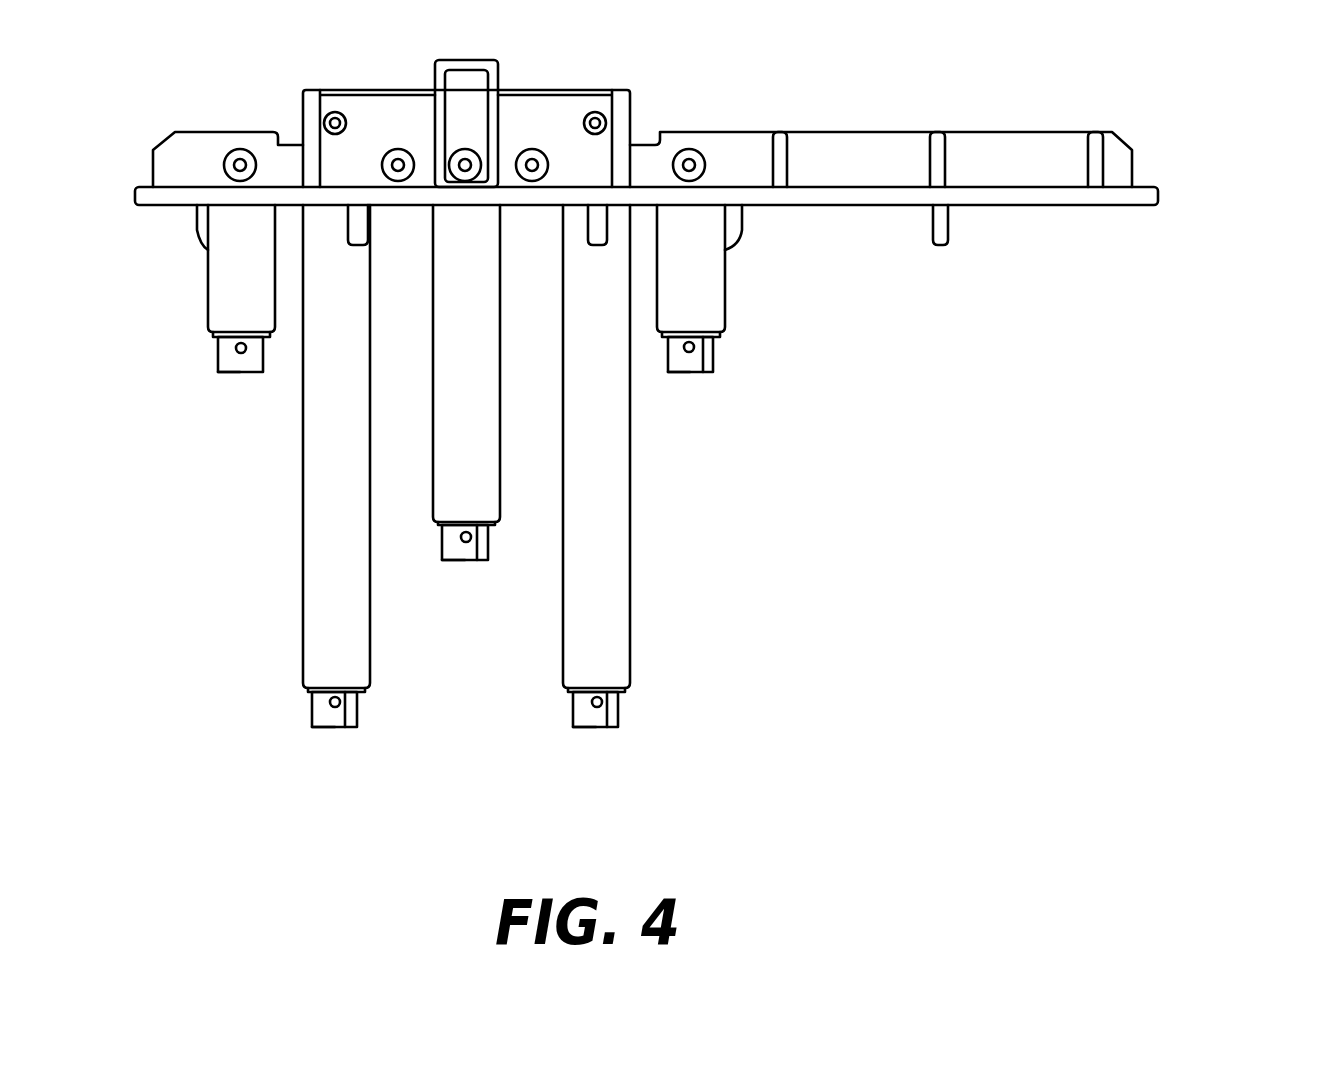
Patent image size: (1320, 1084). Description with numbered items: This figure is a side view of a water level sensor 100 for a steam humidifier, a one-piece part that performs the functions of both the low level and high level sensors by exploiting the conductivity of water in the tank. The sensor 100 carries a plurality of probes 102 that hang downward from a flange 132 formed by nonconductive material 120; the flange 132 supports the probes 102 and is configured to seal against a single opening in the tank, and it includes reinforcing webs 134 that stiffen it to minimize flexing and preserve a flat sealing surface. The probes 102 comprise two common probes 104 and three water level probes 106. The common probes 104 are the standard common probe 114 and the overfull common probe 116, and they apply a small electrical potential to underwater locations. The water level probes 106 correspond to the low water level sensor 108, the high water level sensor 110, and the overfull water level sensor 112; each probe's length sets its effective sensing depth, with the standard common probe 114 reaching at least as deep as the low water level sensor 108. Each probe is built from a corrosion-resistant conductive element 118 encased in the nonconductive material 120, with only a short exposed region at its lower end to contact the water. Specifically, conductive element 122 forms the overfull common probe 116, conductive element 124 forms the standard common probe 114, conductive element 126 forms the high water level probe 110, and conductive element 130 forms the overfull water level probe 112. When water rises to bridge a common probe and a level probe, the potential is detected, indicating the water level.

The water level sensor 100 is at (850, 132).
The probes 102 is at (885, 476).
The common probes 104 is at (214, 337).
The water level probes 106 is at (476, 562).
The low water level sensor 108 is at (630, 641).
The high water level sensor 110 is at (500, 425).
The overfull water level sensor 112 is at (725, 288).
The standard common probe 114 is at (303, 634).
The overfull common probe 116 is at (208, 300).
The conductive elements 118 is at (250, 373).
The nonconductive material 120 is at (1038, 132).
The conductive element 122 is at (228, 373).
The conductive element 124 is at (320, 728).
The conductive element 126 is at (450, 562).
The conductive element 130 is at (672, 373).
The flange 132 is at (1160, 193).
The reinforcing webs 134 is at (938, 132).